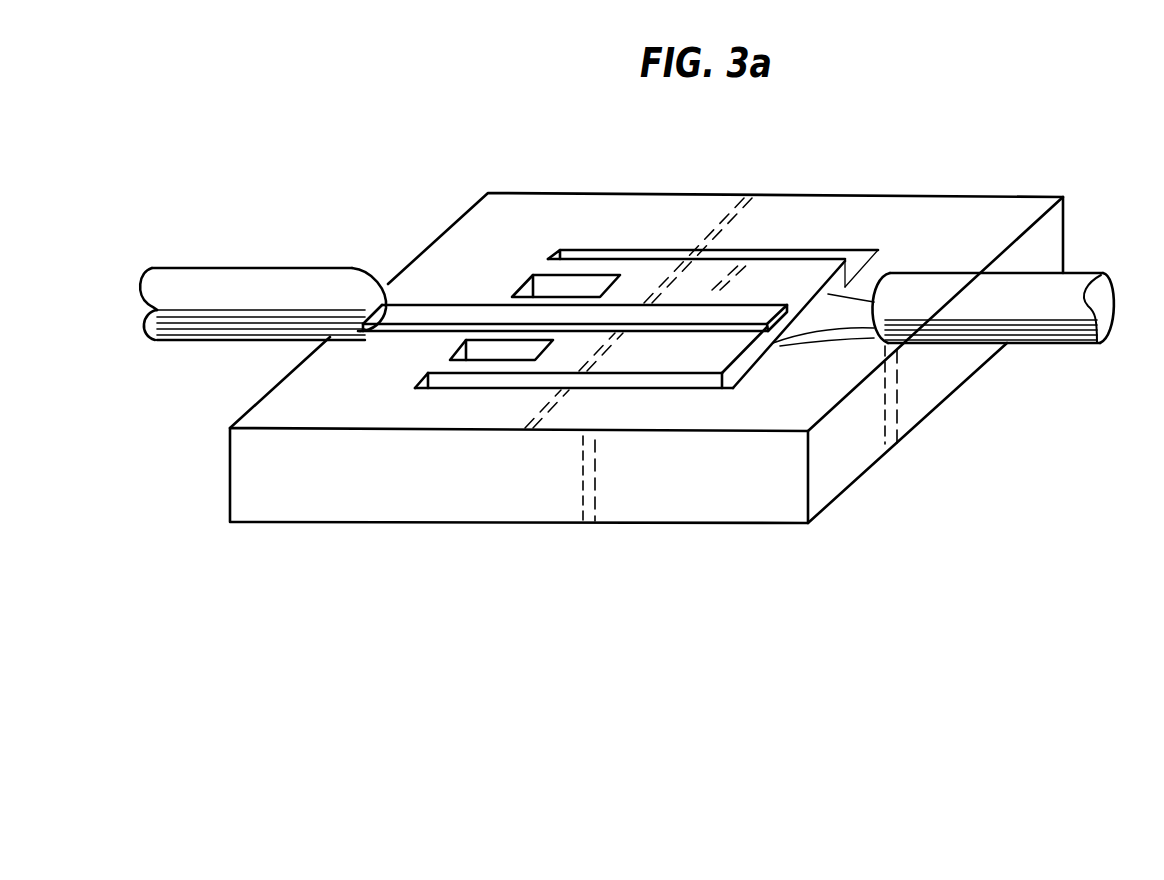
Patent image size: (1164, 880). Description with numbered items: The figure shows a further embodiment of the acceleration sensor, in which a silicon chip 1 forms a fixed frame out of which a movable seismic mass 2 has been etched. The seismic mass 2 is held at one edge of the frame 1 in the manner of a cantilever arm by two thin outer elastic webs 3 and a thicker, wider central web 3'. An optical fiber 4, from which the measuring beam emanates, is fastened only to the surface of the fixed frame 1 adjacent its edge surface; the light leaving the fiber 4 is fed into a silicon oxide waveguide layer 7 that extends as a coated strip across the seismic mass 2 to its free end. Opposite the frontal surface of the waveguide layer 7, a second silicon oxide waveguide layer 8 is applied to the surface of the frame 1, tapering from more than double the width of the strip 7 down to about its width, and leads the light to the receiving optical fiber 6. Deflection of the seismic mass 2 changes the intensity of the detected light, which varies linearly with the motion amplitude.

The silicon chip 1 is at (357, 480).
The seismic mass 2 is at (640, 277).
The outer elastic webs 3 is at (408, 322).
The central web 3' is at (326, 341).
The optical fiber 4 is at (332, 291).
The receiving optical fiber 6 is at (1065, 295).
The waveguide layer 7 is at (585, 313).
The waveguide layer 8 is at (878, 252).